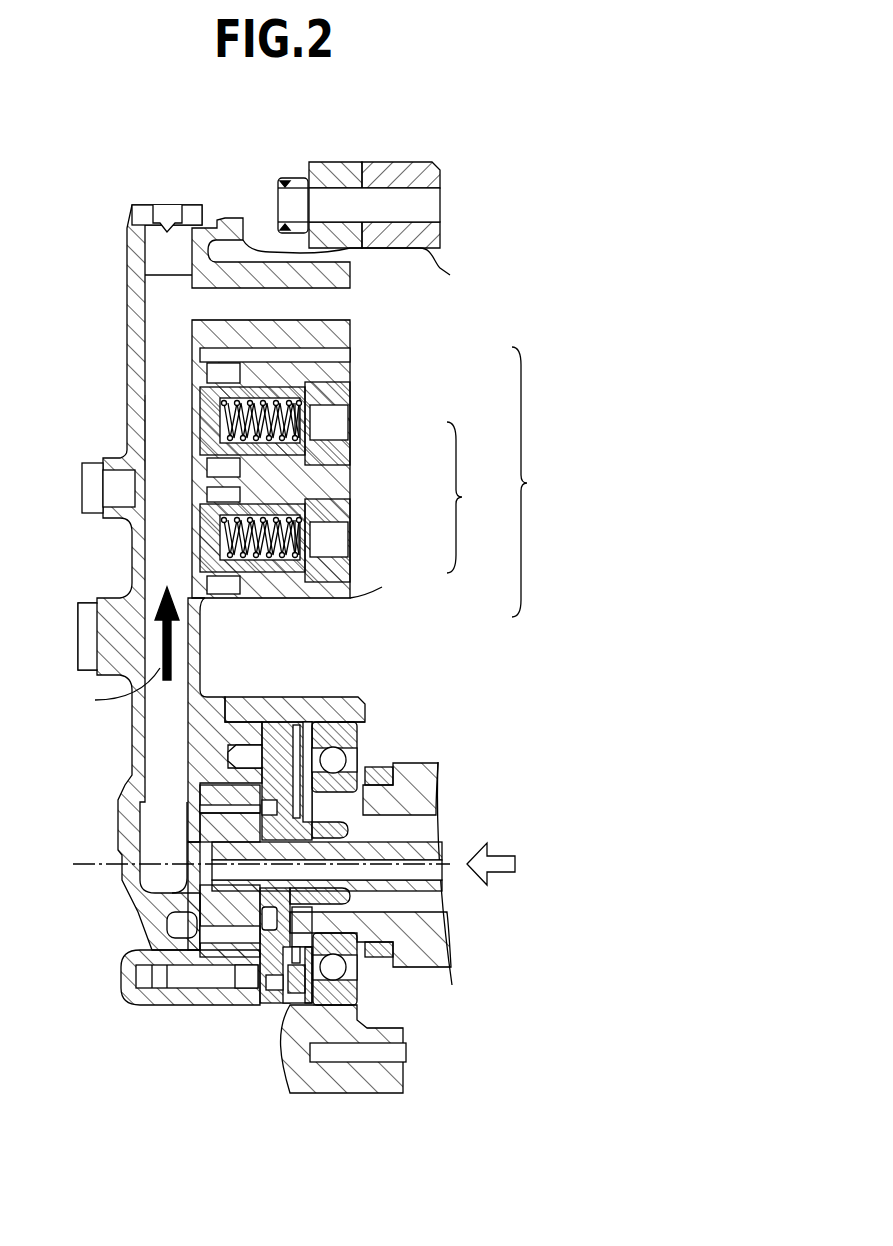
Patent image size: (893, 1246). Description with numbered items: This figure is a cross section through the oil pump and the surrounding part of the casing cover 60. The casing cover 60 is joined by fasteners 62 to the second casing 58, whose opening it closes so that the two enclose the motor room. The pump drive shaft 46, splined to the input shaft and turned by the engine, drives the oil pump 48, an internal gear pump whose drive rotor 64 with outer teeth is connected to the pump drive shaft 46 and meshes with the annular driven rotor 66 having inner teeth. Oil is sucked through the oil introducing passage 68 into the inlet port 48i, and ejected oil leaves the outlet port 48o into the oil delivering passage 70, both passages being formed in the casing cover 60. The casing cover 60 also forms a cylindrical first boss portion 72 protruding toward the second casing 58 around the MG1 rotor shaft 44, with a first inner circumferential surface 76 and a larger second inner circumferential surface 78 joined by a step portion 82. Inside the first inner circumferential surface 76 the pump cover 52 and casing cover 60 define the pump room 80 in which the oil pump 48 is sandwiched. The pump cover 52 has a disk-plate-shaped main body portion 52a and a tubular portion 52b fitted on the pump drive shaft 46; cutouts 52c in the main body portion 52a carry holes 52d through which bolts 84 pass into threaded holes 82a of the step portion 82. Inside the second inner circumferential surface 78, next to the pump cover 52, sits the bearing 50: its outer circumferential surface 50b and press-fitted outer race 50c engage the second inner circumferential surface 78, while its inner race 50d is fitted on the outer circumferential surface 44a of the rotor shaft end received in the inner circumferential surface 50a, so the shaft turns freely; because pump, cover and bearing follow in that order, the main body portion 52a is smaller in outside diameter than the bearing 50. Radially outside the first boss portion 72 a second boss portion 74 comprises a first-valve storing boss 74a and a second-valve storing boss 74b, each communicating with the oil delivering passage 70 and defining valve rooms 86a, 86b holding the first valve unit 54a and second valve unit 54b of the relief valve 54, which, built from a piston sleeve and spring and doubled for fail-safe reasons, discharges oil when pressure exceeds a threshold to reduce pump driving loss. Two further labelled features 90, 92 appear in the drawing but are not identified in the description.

The MG1 rotor shaft 44 is at (410, 800).
The outer circumferential surface 44a is at (365, 770).
The pump drive shaft 46 is at (423, 882).
The oil pump 48 is at (217, 772).
The outlet port 48o is at (200, 807).
The inlet port 48i is at (198, 928).
The bearing 50 is at (368, 998).
The inner circumferential surface 50a is at (395, 935).
The outer circumferential surface 50b is at (340, 1010).
The outer race 50c is at (328, 1000).
The inner race 50d is at (360, 953).
The pump cover 52 is at (336, 890).
The main body portion 52a is at (265, 718).
The tubular portion 52b is at (347, 833).
The cutouts 52c is at (300, 990).
The holes 52d is at (278, 995).
The relief valve 54 is at (345, 480).
The first valve unit 54a is at (358, 438).
The second valve unit 54b is at (358, 556).
The second casing 58 is at (402, 174).
The casing cover 60 is at (107, 316).
The fasteners 62 is at (287, 208).
The drive rotor 64 is at (200, 818).
The driven rotor 66 is at (210, 790).
The oil introducing passage 68 is at (220, 948).
The oil delivering passage 70 is at (145, 432).
The first boss portion 72 is at (280, 705).
The second boss portion 74 is at (373, 431).
The first-valve storing boss 74a is at (350, 363).
The second-valve storing boss 74b is at (350, 597).
The first inner circumferential surface 76 is at (215, 945).
The second inner circumferential surface 78 is at (332, 742).
The pump room 80 is at (243, 977).
The step portion 82 is at (293, 955).
The threaded holes 82a is at (272, 980).
The bolts 84 is at (180, 977).
The valve room 86a is at (322, 427).
The valve room 86b is at (322, 544).
The case 90 is at (297, 598).
The seal 92 is at (330, 697).